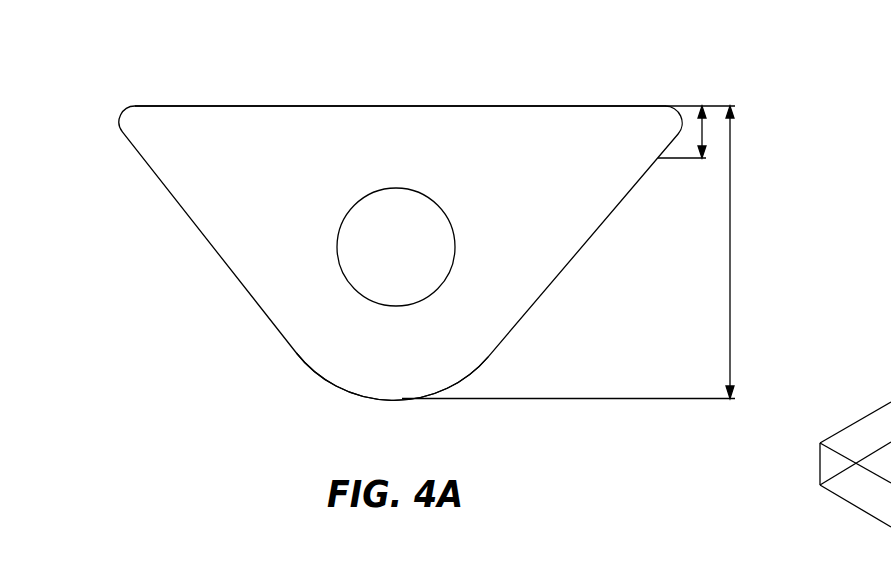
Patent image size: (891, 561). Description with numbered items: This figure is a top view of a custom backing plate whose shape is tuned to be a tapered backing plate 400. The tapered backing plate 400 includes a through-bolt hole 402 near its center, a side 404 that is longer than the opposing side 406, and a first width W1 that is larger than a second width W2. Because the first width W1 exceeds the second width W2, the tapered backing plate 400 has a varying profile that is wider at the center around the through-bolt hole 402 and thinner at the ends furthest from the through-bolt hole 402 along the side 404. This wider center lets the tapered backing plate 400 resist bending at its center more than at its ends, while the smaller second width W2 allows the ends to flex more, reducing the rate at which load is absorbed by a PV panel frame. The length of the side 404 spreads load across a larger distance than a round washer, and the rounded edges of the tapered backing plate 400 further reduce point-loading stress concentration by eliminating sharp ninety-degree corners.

The tapered backing plate 400 is at (248, 90).
The through-bolt hole 402 is at (450, 213).
The side 404 is at (503, 105).
The opposing side 406 is at (388, 402).
The first width W1 is at (733, 253).
The second width W2 is at (705, 133).